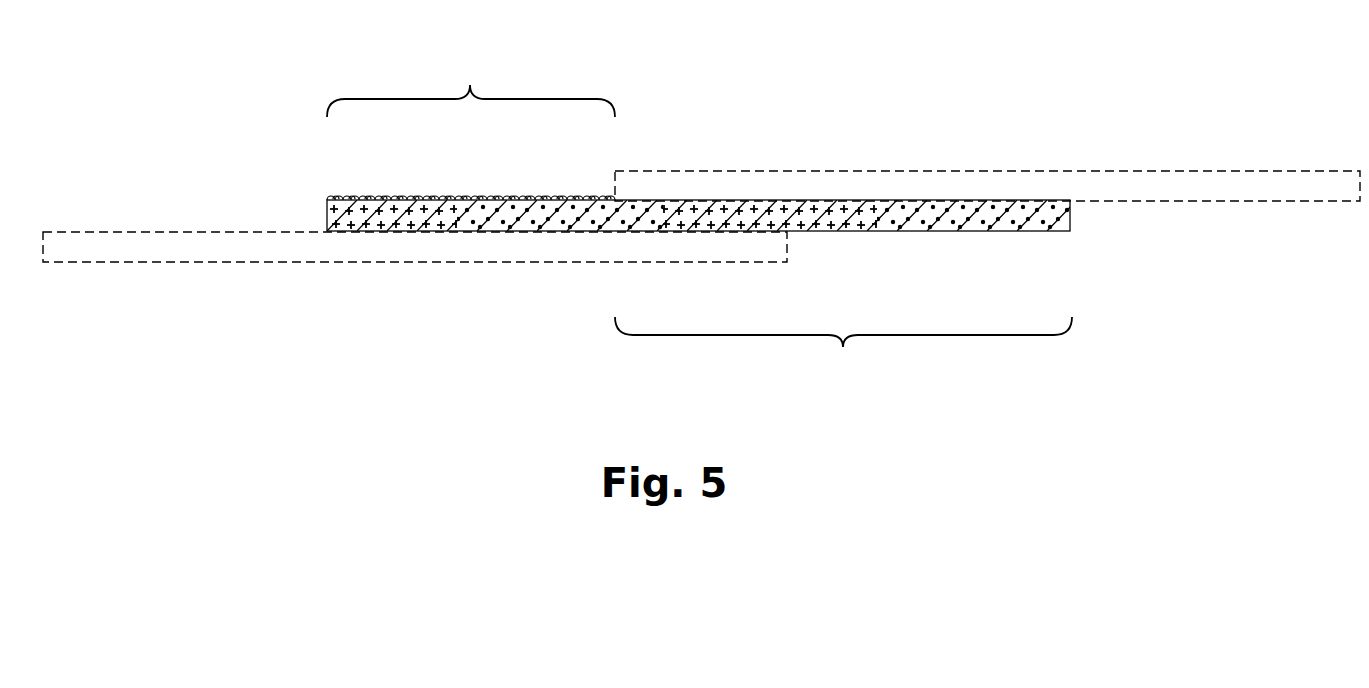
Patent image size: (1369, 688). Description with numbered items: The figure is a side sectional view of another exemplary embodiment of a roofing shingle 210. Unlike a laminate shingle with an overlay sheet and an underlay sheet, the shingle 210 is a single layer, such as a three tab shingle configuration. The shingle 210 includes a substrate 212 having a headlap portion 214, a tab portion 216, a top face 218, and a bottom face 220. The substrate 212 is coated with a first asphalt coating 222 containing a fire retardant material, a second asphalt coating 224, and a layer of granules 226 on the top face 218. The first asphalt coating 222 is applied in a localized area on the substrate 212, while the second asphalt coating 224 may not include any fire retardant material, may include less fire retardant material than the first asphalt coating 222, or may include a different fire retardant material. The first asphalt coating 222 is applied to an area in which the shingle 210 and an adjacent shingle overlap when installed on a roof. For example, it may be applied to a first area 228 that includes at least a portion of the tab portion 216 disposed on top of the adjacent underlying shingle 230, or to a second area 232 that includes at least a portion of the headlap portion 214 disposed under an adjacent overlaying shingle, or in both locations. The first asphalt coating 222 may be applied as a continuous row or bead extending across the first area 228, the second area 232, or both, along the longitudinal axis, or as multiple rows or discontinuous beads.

The shingle 210 is at (286, 89).
The substrate 212 is at (1070, 215).
The headlap portion 214 is at (843, 349).
The tab portion 216 is at (471, 84).
The top face 218 is at (680, 200).
The bottom face 220 is at (990, 232).
The first asphalt coating 222 is at (327, 222).
The second asphalt coating 224 is at (945, 215).
The layer of granules 226 is at (347, 198).
The first area 228 is at (389, 258).
The adjacent underlying shingle 230 is at (170, 245).
The second area 232 is at (1130, 186).